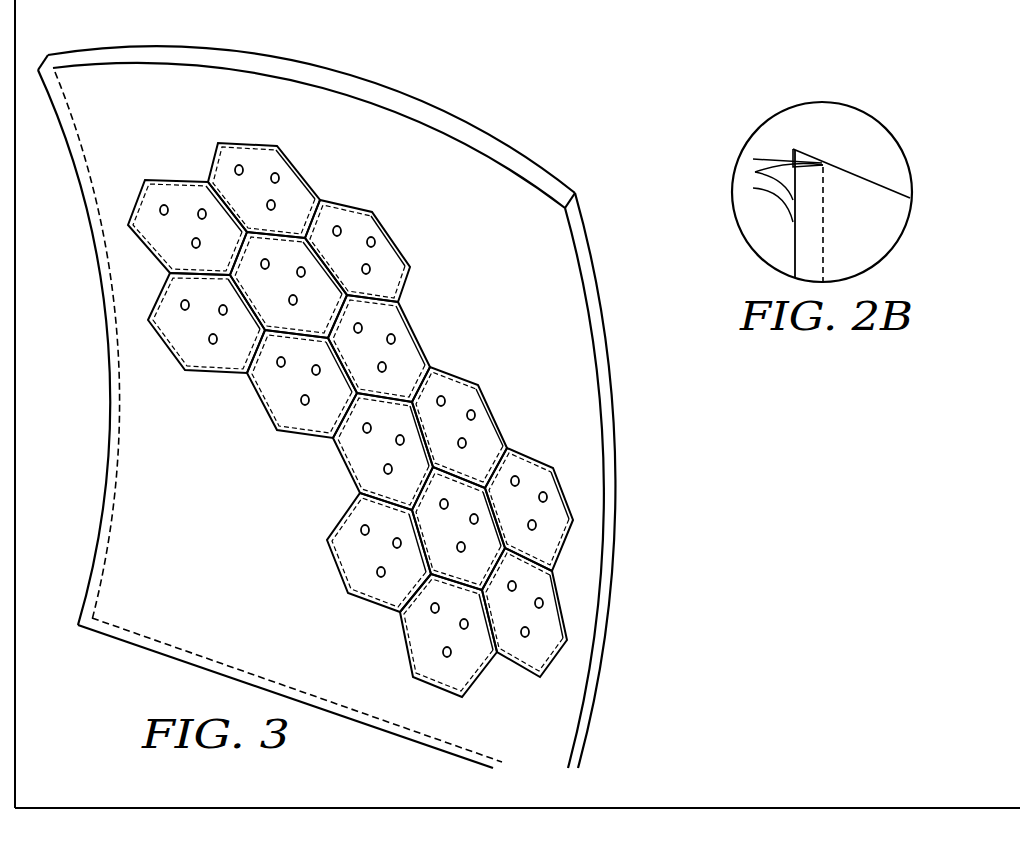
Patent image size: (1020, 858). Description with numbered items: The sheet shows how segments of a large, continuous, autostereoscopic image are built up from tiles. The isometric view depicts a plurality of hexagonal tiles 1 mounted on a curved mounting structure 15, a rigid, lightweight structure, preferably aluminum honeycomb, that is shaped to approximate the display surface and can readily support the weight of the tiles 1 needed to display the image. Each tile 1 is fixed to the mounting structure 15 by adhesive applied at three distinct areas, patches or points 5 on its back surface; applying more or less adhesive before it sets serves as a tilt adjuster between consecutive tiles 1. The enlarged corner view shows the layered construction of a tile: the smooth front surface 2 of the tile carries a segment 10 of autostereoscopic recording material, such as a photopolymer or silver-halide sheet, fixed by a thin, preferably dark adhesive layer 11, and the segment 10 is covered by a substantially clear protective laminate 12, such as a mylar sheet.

In FIG. 3, the tile 1 is at (318, 574).
In FIG. 3, the points 5 is at (278, 176).
In FIG. 3, the mounting structure 15 is at (452, 90).
In FIG. 2B, the front surface 2 is at (797, 152).
In FIG. 2B, the segment 10 is at (755, 172).
In FIG. 2B, the adhesive layer 11 is at (780, 157).
In FIG. 2B, the protective laminate 12 is at (755, 188).